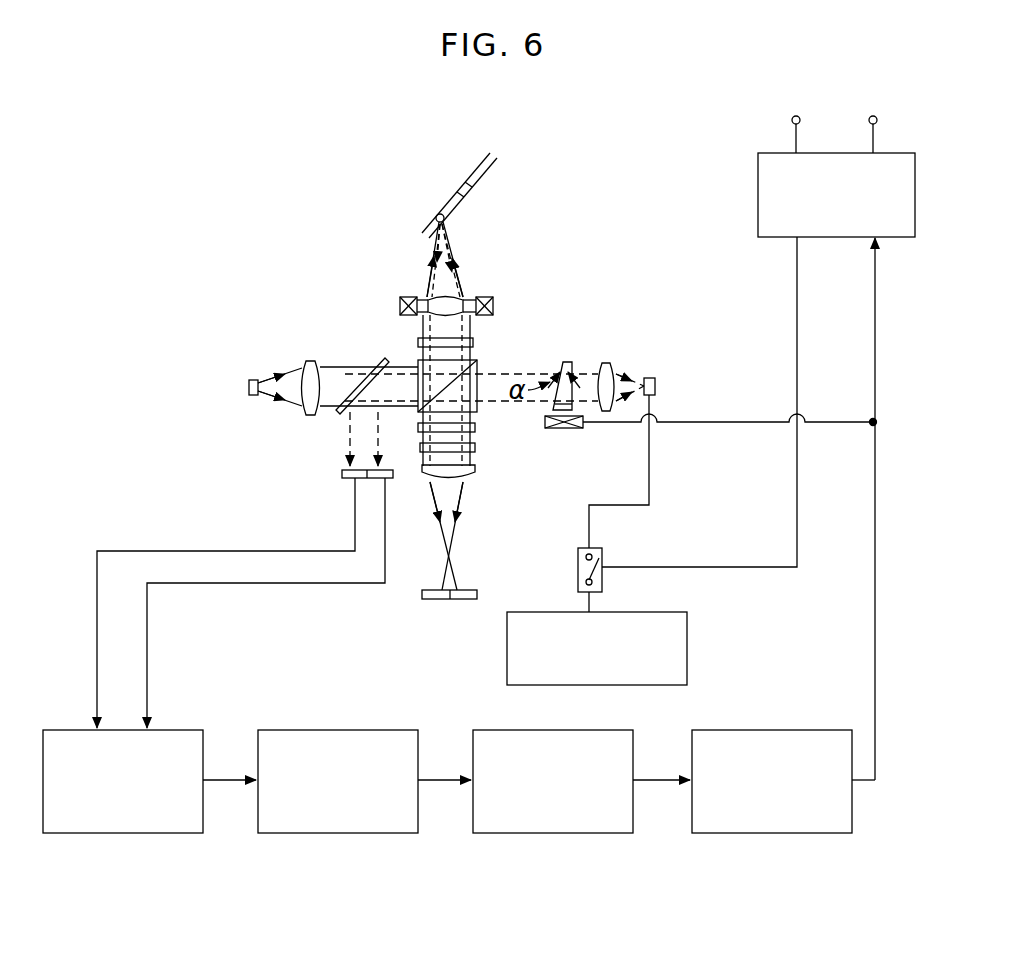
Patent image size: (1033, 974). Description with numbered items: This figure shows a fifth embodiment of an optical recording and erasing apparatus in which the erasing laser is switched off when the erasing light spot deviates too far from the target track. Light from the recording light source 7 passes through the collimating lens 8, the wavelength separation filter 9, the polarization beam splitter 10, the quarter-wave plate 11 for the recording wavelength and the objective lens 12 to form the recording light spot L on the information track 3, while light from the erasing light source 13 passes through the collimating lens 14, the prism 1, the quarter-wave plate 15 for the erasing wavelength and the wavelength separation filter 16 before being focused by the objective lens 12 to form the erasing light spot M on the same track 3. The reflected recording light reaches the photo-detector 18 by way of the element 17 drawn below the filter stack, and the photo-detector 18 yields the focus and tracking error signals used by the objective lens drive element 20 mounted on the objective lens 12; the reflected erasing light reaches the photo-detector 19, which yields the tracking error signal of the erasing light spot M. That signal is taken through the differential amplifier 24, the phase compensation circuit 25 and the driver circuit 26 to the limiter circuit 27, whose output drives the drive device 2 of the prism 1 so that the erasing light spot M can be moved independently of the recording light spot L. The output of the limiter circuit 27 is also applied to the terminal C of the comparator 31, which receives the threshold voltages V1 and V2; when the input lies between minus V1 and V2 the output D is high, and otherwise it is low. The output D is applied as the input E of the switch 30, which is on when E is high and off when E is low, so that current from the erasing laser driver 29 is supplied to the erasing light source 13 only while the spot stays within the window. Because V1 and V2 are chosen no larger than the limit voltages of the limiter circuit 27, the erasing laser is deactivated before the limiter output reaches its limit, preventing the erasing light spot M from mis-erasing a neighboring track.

The prism 1 is at (568, 362).
The drive device 2 is at (576, 430).
The information track 3 is at (493, 168).
The recording light source 7 is at (257, 378).
The collimating lens 8 is at (308, 360).
The wavelength separation filter 9 is at (382, 360).
The polarization beam splitter 10 is at (478, 362).
The λ1/4 plate 11 is at (477, 341).
The objective lens 12 is at (471, 297).
The erasing light source 13 is at (650, 377).
The collimating lens 14 is at (608, 362).
The λ2/4 plate 15 is at (477, 428).
The wavelength separation filter 16 is at (477, 447).
The lens 17 is at (477, 468).
The photo-detector 18 is at (477, 592).
The photo-detector 19 is at (342, 474).
The objective lens drive element 20 is at (400, 301).
The differential amplifier 24 is at (115, 833).
The phase compensation circuit 25 is at (324, 833).
The driver circuit 26 is at (548, 833).
The limiter circuit 27 is at (738, 833).
The erasing laser driver 29 is at (688, 643).
The switch 30 is at (577, 560).
The comparator 31 is at (758, 198).
The erasing light spot M is at (452, 192).
The recording light spot L is at (436, 216).
The switch input E is at (611, 557).
The comparator output D is at (808, 259).
The comparator input terminal C is at (887, 259).
The threshold voltage V1 is at (795, 122).
The threshold voltage V2 is at (872, 122).